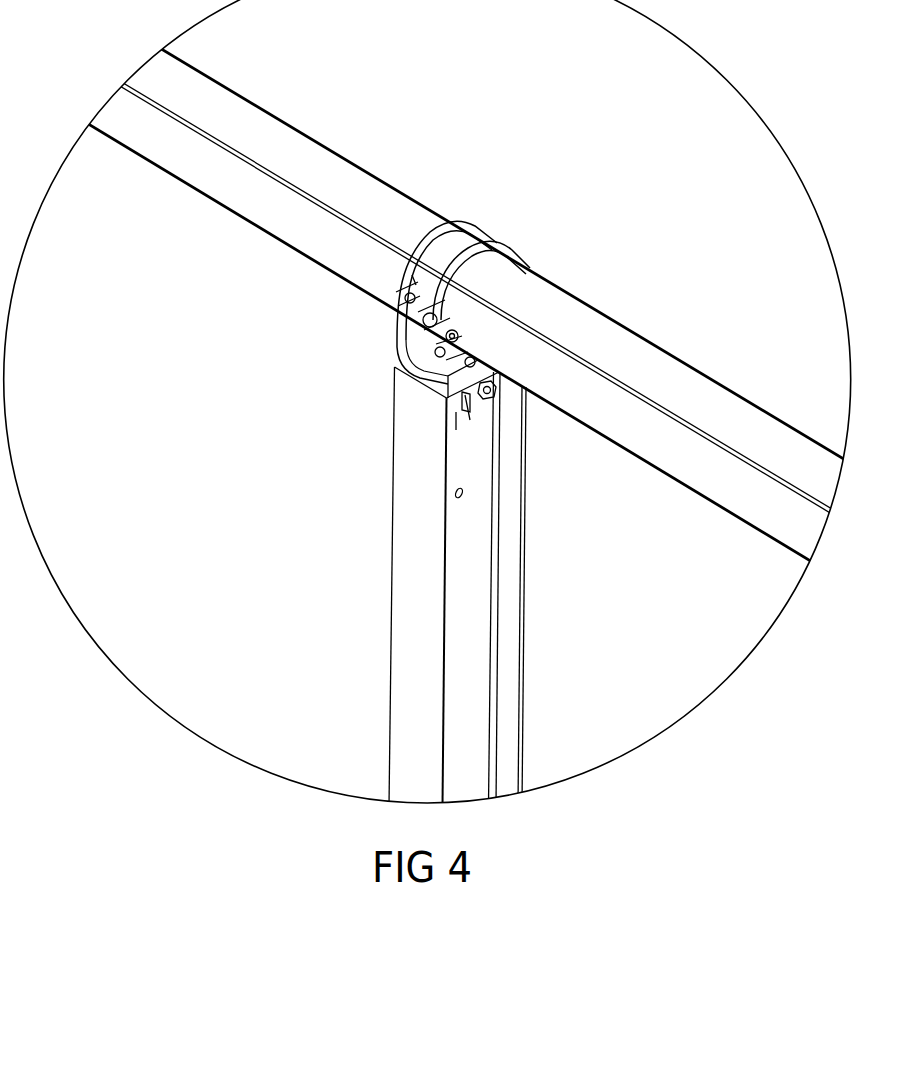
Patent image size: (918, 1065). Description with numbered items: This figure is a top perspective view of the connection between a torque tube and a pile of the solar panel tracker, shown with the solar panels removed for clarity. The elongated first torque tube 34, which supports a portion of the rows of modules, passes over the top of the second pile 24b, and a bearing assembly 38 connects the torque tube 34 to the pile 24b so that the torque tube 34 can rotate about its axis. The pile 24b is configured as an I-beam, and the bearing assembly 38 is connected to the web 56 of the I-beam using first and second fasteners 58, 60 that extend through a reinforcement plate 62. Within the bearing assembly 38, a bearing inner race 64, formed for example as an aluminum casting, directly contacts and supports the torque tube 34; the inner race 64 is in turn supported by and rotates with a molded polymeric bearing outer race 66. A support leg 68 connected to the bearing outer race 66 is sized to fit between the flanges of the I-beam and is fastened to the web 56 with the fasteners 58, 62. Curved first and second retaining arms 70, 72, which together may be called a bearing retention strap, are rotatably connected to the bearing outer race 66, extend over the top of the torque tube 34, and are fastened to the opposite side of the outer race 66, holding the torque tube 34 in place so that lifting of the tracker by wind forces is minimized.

The first torque tube 34 is at (359, 192).
The first retaining arm 70 is at (456, 222).
The second retaining arm 72 is at (478, 236).
The bearing outer race 66 is at (456, 332).
The bearing inner race 64 is at (394, 300).
The bearing assembly 38 is at (360, 349).
The support leg 68 is at (394, 353).
The first fastener 58 is at (460, 418).
The second fastener 60 is at (493, 396).
The reinforcement plate 62 is at (467, 398).
The web 56 is at (470, 540).
The second pile 24b is at (418, 562).